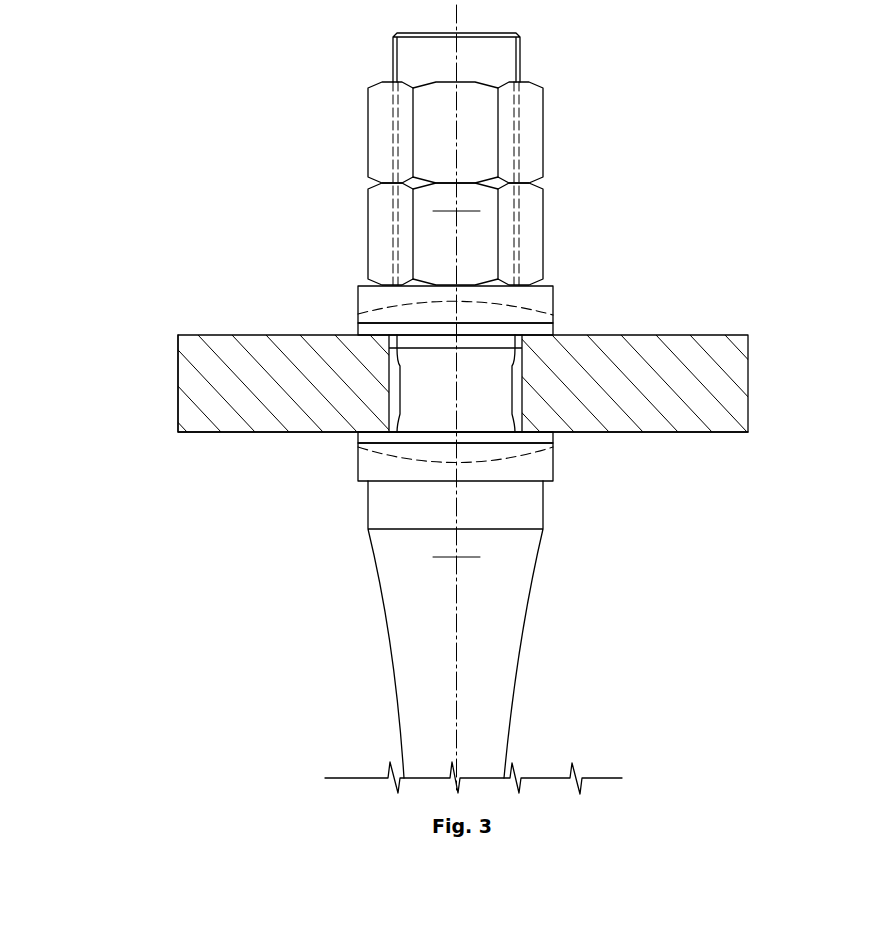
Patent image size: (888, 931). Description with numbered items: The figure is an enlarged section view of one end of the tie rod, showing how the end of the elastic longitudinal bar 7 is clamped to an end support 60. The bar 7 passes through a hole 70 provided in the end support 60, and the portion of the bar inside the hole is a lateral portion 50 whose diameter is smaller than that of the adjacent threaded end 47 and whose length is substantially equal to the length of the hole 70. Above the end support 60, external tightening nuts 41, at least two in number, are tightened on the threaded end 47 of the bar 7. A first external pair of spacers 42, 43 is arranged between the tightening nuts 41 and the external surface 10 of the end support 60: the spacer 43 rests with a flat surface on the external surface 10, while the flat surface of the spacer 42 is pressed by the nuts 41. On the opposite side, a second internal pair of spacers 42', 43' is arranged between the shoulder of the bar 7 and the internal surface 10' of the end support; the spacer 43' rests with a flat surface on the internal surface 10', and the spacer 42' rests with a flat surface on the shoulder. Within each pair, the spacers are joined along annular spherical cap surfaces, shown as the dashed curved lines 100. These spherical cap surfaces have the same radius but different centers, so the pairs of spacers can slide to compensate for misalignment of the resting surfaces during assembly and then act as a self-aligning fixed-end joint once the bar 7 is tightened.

The longitudinal bar 7 is at (478, 685).
The external surface of the end support 10 is at (507, 346).
The internal surface of the end support 10' is at (424, 422).
The external tightening nuts 41 is at (535, 203).
The spacer 42 is at (522, 275).
The spacer 42' is at (498, 496).
The spacer 43 is at (536, 304).
The spacer 43' is at (597, 461).
The threaded end 47 is at (520, 52).
The lateral portion 50 is at (410, 394).
The end support 60 is at (730, 385).
The hole 70 is at (395, 370).
The spherical cap surfaces 100 is at (392, 313).